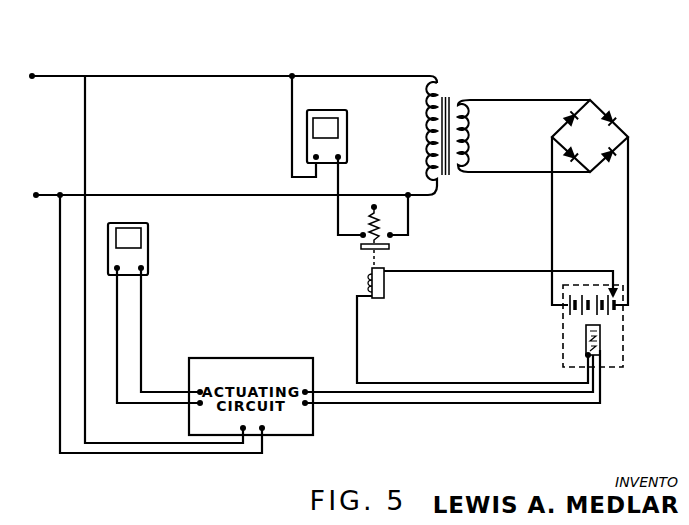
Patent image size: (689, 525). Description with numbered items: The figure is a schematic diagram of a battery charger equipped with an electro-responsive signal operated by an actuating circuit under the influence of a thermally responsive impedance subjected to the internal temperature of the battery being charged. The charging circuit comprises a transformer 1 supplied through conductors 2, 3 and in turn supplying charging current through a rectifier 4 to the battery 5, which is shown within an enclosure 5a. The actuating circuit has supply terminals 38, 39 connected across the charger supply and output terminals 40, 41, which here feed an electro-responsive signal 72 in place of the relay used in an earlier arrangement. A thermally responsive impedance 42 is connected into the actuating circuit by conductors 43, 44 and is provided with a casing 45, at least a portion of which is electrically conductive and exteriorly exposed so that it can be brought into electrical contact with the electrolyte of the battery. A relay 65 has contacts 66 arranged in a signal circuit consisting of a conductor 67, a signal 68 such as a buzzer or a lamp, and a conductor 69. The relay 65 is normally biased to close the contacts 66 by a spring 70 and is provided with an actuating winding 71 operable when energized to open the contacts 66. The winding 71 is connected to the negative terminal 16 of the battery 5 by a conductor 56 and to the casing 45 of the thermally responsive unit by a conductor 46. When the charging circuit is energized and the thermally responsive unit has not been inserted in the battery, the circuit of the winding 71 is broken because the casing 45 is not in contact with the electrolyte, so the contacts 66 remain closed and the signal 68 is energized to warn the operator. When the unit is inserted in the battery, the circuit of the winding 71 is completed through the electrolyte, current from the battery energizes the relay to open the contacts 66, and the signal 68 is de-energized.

The transformer 1 is at (450, 94).
The conductor 2 is at (55, 76).
The conductor 3 is at (44, 195).
The rectifier 4 is at (590, 202).
The battery 5 is at (586, 296).
The battery enclosure 5a is at (625, 320).
The negative terminal 16 is at (619, 290).
The supply terminal 38 is at (242, 431).
The supply terminal 39 is at (265, 431).
The output terminal 40 is at (199, 391).
The output terminal 41 is at (199, 404).
The thermally responsive impedance 42 is at (602, 337).
The conductor 43 is at (428, 404).
The conductor 44 is at (462, 394).
The casing 45 is at (600, 356).
The conductor 46 is at (500, 384).
The conductor 56 is at (500, 273).
The relay 65 is at (366, 259).
The contacts 66 is at (392, 238).
The conductor 67 is at (291, 99).
The signal 68 is at (348, 132).
The conductor 69 is at (342, 184).
The spring 70 is at (379, 229).
The actuating winding 71 is at (386, 290).
The electro-responsive signal 72 is at (150, 262).